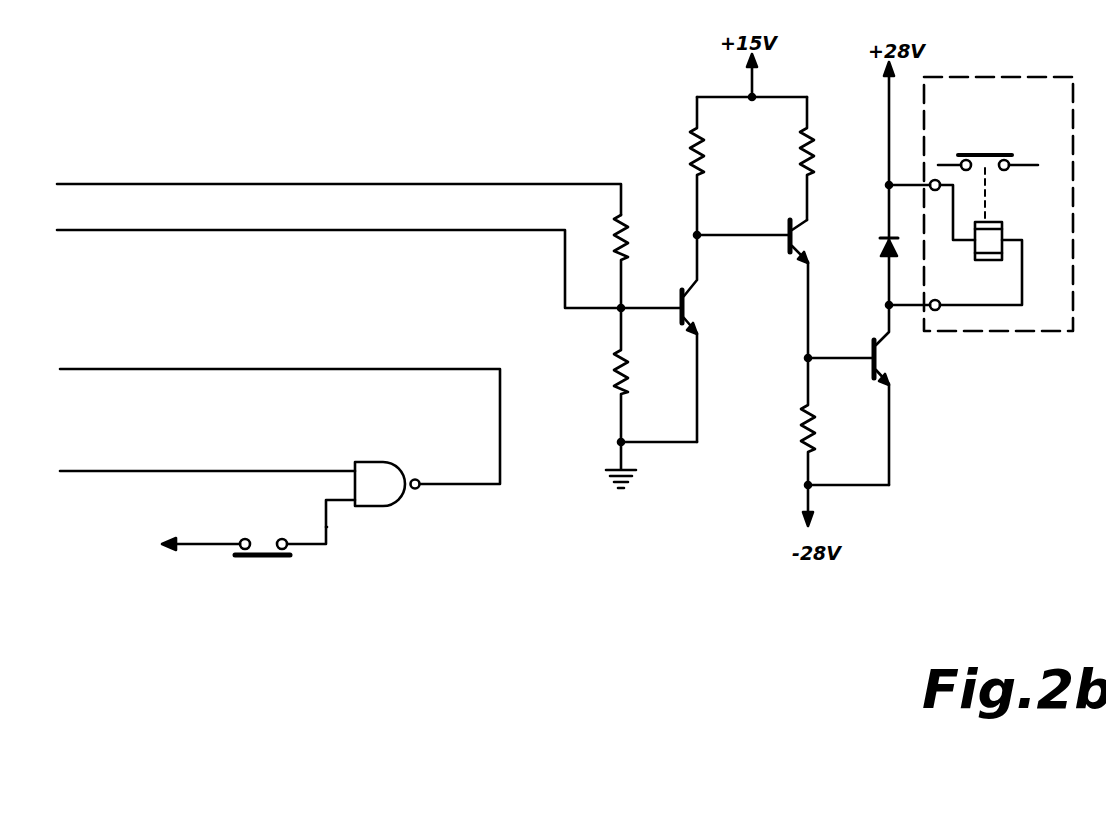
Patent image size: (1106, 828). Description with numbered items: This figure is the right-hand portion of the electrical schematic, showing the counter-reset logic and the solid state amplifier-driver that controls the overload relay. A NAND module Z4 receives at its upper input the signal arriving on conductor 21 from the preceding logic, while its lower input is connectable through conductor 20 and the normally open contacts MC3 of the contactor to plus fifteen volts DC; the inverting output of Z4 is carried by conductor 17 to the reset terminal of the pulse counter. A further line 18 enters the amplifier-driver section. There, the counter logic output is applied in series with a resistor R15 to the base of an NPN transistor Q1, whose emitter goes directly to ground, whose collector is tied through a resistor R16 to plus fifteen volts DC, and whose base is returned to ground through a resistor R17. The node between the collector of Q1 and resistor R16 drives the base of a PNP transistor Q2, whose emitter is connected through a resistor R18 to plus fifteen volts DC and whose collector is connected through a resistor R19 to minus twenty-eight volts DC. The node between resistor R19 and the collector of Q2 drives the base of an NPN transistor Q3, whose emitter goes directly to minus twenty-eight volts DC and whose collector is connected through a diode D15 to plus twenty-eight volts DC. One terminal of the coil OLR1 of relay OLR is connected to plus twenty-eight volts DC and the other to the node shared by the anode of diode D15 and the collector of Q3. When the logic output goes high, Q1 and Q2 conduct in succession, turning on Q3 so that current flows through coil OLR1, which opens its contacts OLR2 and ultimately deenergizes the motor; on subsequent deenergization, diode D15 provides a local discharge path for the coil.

The input line 18 is at (429, 183).
The conductor 17 is at (242, 368).
The conductor 21 is at (128, 470).
The conductor 20 is at (327, 528).
The NAND module Z4 is at (354, 503).
The normally open contacts MC3 is at (259, 537).
The resistor R15 is at (628, 240).
The resistor R16 is at (705, 152).
The resistor R17 is at (628, 379).
The resistor R18 is at (815, 152).
The resistor R19 is at (815, 430).
The NPN transistor Q1 is at (690, 309).
The PNP transistor Q2 is at (797, 238).
The NPN transistor Q3 is at (884, 360).
The diode D15 is at (882, 243).
The relay OLR is at (988, 191).
The coil OLR1 is at (1000, 235).
The contacts OLR2 is at (1027, 147).